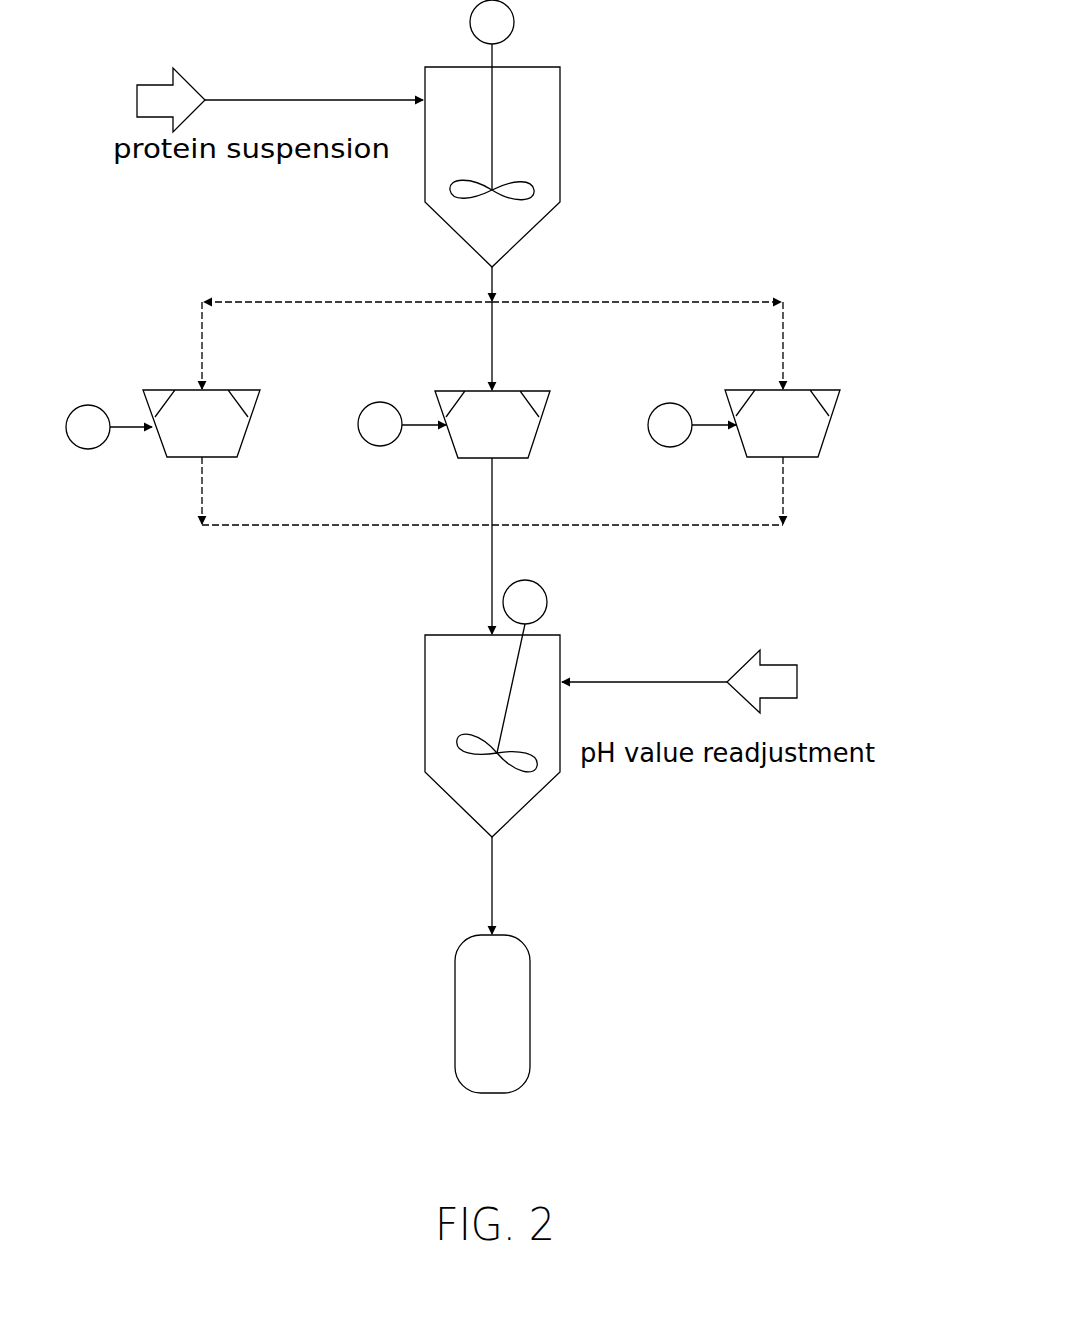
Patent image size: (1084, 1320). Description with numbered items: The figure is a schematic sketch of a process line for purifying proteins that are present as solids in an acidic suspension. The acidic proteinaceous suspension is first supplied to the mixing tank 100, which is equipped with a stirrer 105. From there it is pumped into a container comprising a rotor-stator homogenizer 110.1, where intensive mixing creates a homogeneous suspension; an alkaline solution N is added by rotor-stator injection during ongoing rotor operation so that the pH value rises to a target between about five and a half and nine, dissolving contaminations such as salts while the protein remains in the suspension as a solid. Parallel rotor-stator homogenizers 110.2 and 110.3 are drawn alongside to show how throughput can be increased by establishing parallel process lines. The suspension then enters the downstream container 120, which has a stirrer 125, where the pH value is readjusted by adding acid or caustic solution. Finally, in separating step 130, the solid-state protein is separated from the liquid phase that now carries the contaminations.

The mixing tank 100 is at (567, 89).
The stirrer 105 is at (544, 184).
The rotor-stator homogenizer 110.1 is at (539, 430).
The rotor-stator homogenizer 110.2 is at (824, 442).
The rotor-stator homogenizer 110.3 is at (244, 433).
The downstream container 120 is at (421, 667).
The stirrer 125 is at (451, 741).
The separating step 130 is at (449, 984).